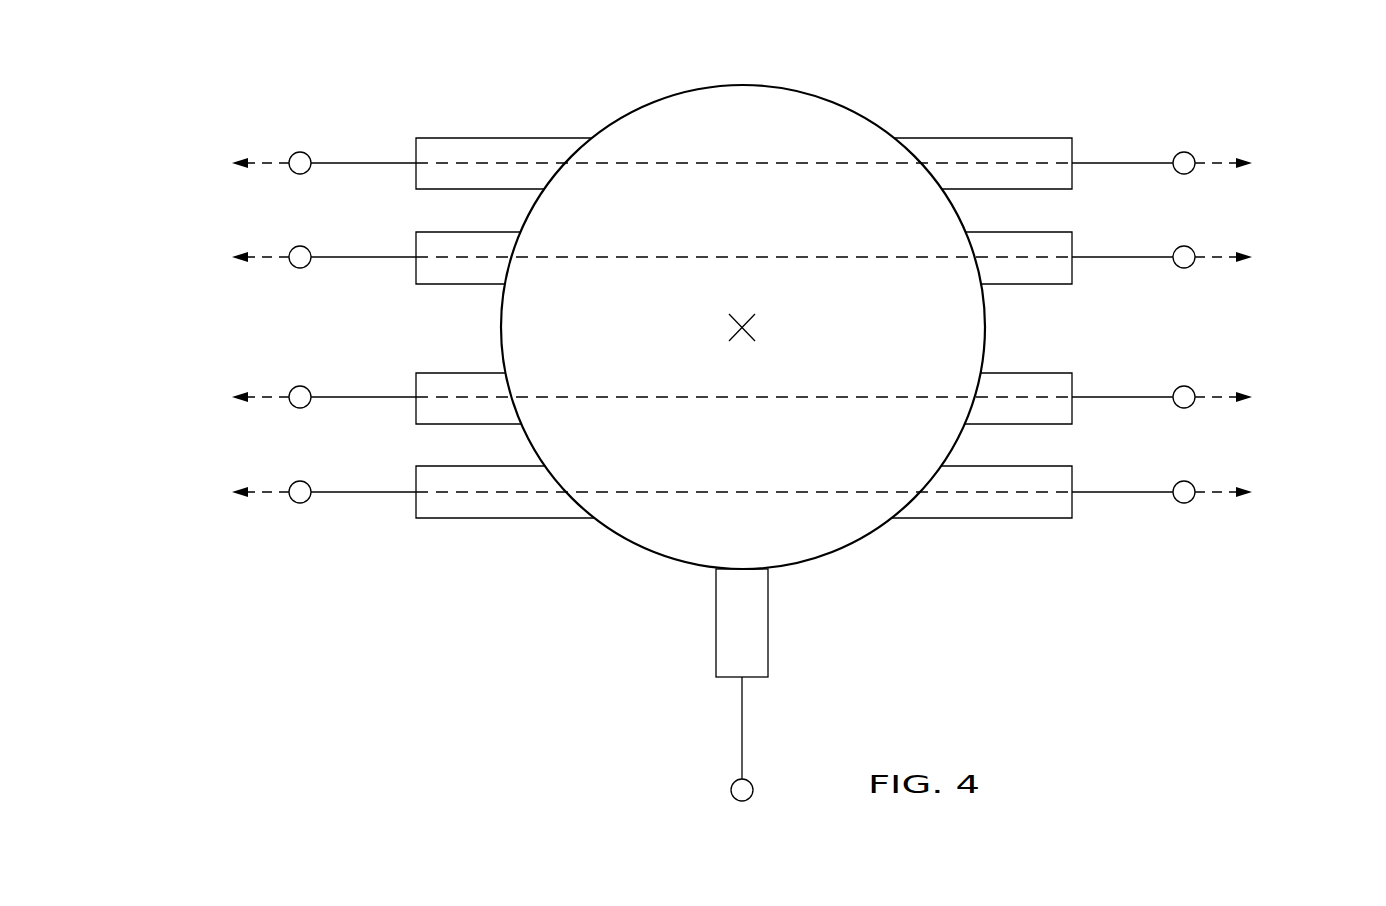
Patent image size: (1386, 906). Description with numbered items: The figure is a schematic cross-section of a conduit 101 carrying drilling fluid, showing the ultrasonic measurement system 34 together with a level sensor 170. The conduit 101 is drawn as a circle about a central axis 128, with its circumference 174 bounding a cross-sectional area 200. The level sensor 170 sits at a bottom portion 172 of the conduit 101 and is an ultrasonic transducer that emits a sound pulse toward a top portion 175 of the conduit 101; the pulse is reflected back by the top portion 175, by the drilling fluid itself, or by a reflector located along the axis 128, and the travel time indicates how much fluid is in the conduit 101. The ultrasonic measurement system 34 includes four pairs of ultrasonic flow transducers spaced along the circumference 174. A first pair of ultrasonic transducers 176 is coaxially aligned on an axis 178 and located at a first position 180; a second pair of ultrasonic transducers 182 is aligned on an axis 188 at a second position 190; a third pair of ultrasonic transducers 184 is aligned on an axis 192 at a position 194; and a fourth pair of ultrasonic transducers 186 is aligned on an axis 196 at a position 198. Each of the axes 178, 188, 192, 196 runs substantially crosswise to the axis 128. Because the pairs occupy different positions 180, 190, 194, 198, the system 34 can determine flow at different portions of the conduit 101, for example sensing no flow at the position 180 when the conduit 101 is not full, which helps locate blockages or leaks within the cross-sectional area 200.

The ultrasonic measurement system 34 is at (1039, 90).
The conduit 101 is at (777, 168).
The axis 128 is at (757, 325).
The level sensor 170 is at (768, 622).
The bottom portion 172 is at (705, 580).
The circumference 174 is at (622, 538).
The top portion 175 is at (731, 80).
The first pair of ultrasonic transducers 176 is at (440, 138).
The axis 178 is at (268, 161).
The first position 180 is at (592, 134).
The second pair of ultrasonic transducers 182 is at (440, 232).
The third pair of ultrasonic transducers 184 is at (440, 373).
The fourth pair of ultrasonic transducers 186 is at (440, 466).
The axis 188 is at (268, 255).
The second position 190 is at (518, 226).
The axis 192 is at (268, 395).
The position 194 is at (496, 354).
The axis 196 is at (268, 490).
The position 198 is at (531, 462).
The cross-sectional area 200 is at (846, 470).